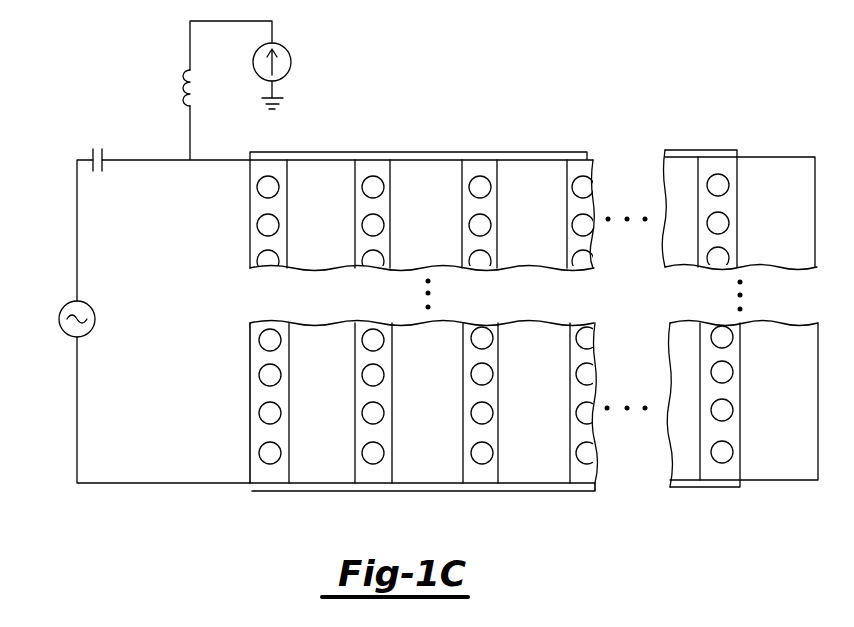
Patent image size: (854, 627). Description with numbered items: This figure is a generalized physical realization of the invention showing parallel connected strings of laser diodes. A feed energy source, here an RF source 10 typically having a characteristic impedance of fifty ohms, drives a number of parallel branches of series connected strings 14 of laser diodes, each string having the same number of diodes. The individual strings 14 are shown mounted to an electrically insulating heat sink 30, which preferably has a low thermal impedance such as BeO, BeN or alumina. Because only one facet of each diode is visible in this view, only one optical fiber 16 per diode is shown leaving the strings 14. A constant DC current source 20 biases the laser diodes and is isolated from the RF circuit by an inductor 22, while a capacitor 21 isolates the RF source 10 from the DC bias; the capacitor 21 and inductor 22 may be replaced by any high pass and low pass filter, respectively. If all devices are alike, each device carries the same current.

The RF source 10 is at (70, 335).
The constant DC current source 20 is at (285, 52).
The capacitor 21 is at (93, 150).
The inductor 22 is at (184, 76).
The series connected strings 14 is at (356, 222).
The optical fiber 16 is at (272, 227).
The heat sink 30 is at (315, 467).